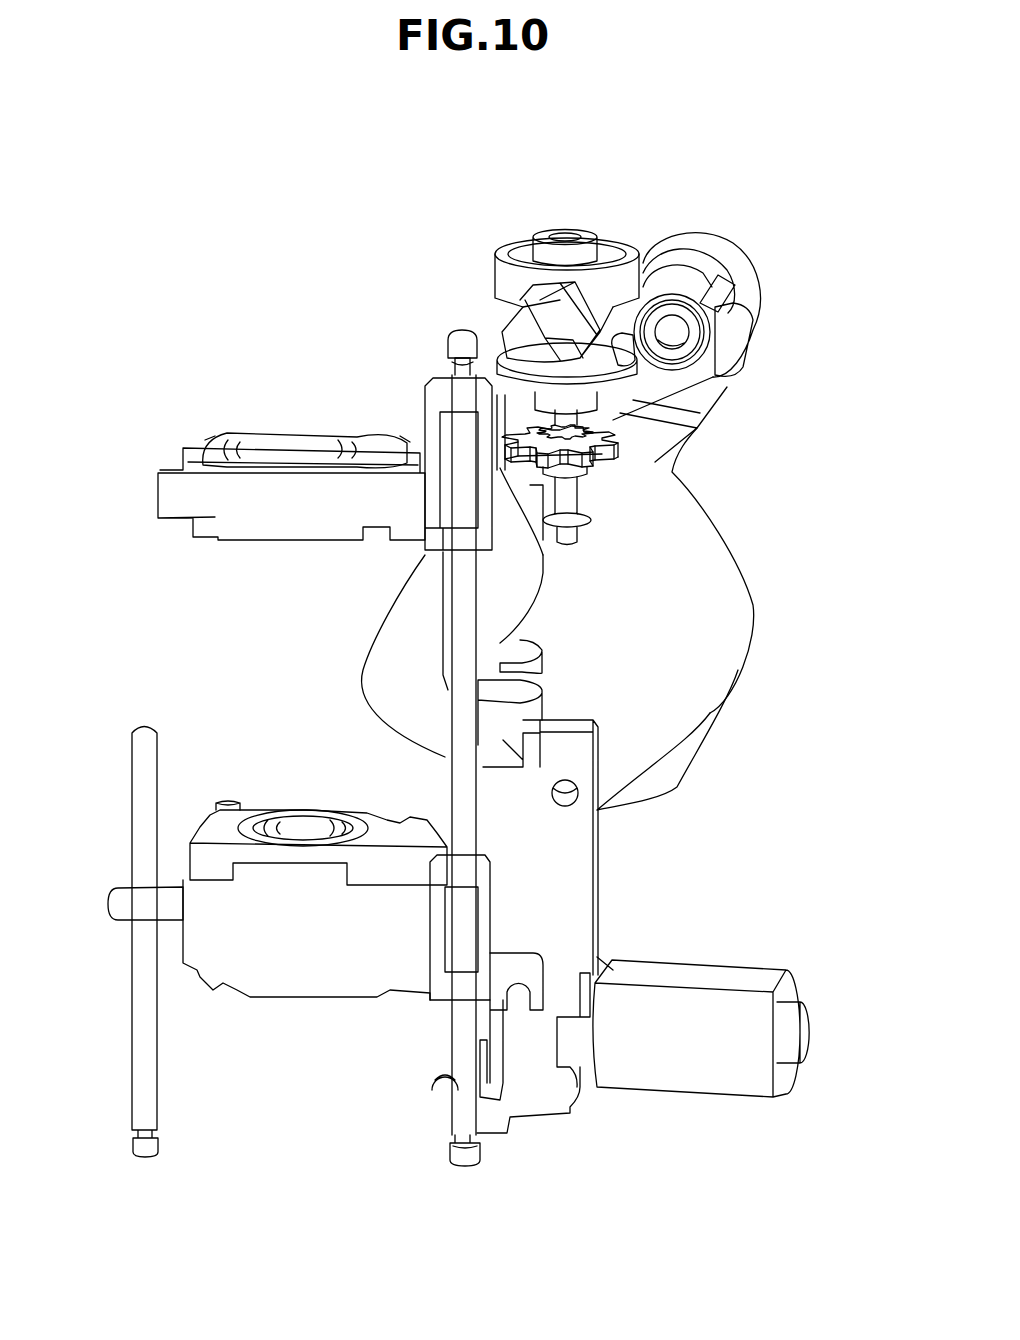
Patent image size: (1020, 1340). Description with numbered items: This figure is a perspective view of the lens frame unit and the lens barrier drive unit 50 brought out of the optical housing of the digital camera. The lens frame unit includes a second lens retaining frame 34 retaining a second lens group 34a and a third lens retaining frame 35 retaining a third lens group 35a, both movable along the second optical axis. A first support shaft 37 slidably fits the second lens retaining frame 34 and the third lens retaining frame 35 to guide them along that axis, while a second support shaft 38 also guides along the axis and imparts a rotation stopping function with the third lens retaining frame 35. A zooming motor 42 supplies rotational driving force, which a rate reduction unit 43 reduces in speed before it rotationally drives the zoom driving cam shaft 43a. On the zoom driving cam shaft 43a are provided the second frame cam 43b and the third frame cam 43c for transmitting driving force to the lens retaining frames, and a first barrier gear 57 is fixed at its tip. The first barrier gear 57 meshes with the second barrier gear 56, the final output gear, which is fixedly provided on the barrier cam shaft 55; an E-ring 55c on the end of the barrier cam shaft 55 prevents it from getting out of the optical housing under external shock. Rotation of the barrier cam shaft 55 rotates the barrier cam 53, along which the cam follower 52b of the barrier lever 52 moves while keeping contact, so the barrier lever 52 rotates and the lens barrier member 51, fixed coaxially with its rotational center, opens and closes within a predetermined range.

The second lens retaining frame 34 is at (291, 428).
The second lens group 34a is at (302, 448).
The third lens retaining frame 35 is at (277, 904).
The third lens group 35a is at (303, 828).
The first support shaft 37 is at (455, 1110).
The second support shaft 38 is at (140, 1046).
The zooming motor 42 is at (755, 975).
The rate reduction unit 43 is at (596, 844).
The zoom driving cam shaft 43a is at (545, 568).
The second frame cam 43b is at (545, 600).
The third frame cam 43c is at (527, 733).
The lens barrier drive unit 50 is at (682, 405).
The lens barrier member 51 is at (700, 540).
The barrier lever 52 is at (680, 280).
The cam follower 52b is at (624, 340).
The barrier cam 53 is at (610, 252).
The barrier cam shaft 55 is at (568, 502).
The E-ring 55c is at (590, 520).
The second barrier gear 56 is at (617, 458).
The first barrier gear 57 is at (535, 362).